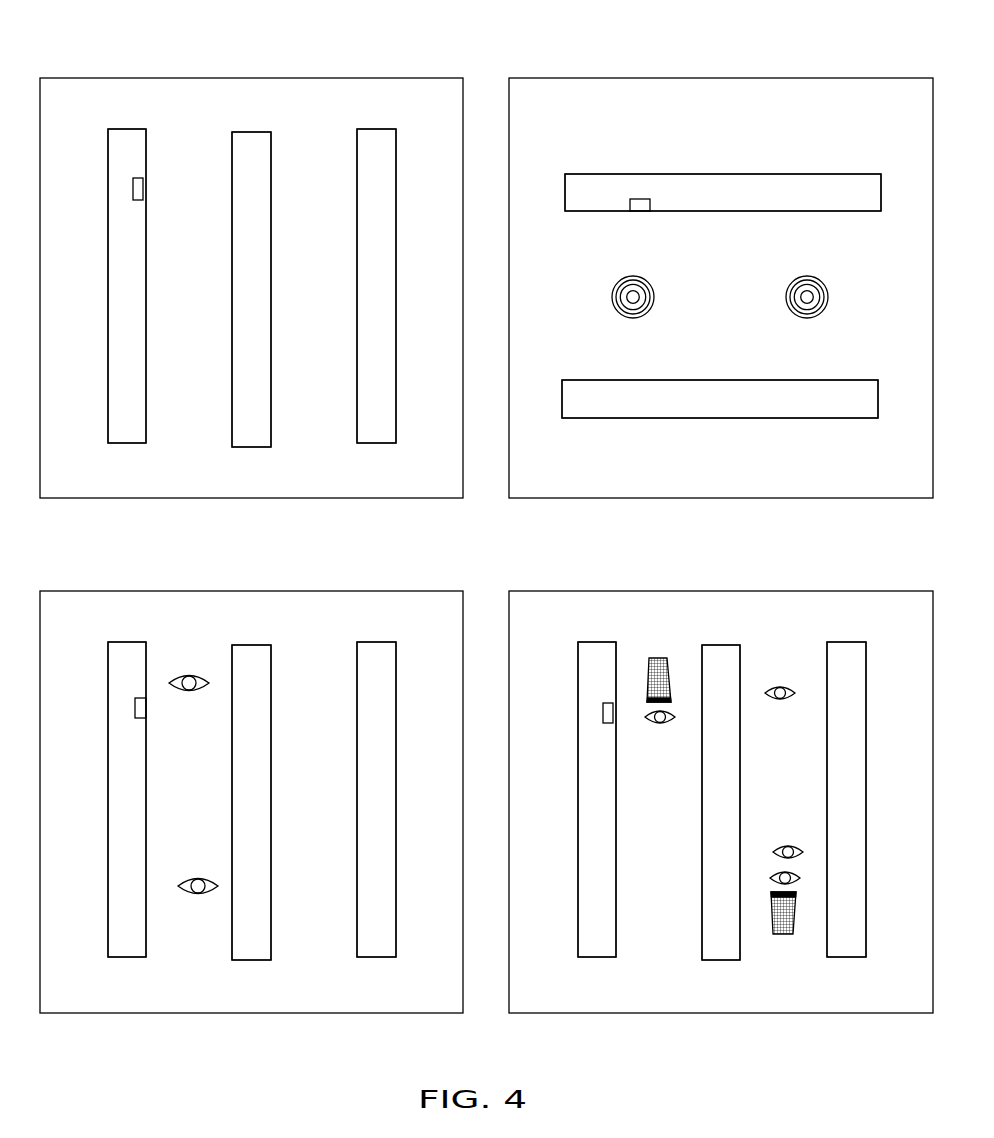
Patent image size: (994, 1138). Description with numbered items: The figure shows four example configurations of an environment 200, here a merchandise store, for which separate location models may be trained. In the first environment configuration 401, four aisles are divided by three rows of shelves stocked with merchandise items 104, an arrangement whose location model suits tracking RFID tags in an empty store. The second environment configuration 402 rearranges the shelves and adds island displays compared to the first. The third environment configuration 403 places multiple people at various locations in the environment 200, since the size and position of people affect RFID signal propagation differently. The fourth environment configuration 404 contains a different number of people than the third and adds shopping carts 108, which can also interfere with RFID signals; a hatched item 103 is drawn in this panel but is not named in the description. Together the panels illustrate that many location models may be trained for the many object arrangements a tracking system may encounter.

The environment 200 is at (267, 88).
The first environment configuration 401 is at (392, 78).
The second environment configuration 402 is at (777, 78).
The third environment configuration 403 is at (376, 591).
The fourth environment configuration 404 is at (695, 591).
The merchandise item 104 is at (143, 188).
The tote / cart 103 is at (660, 659).
The shopping cart 108 is at (783, 934).